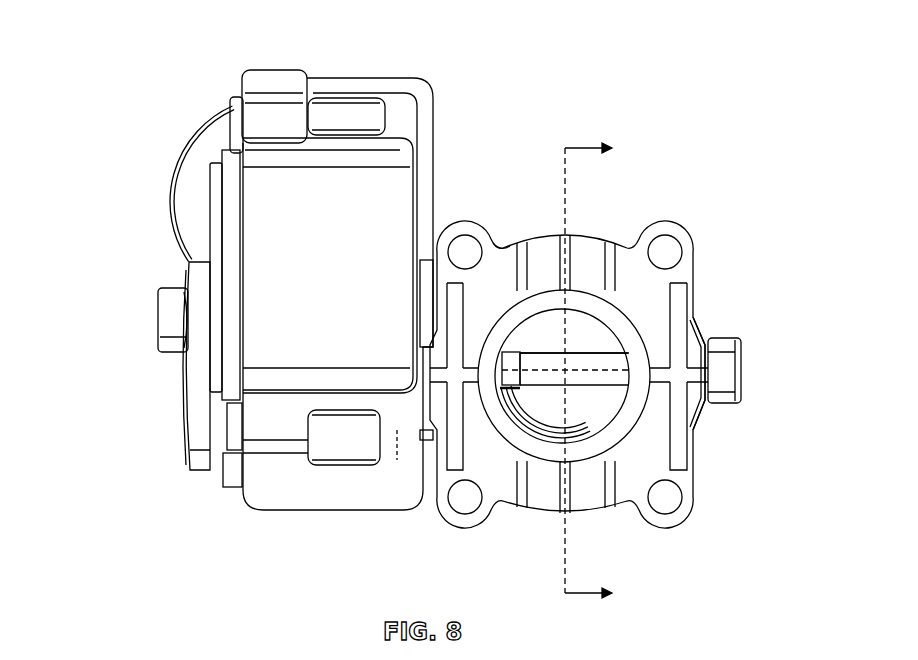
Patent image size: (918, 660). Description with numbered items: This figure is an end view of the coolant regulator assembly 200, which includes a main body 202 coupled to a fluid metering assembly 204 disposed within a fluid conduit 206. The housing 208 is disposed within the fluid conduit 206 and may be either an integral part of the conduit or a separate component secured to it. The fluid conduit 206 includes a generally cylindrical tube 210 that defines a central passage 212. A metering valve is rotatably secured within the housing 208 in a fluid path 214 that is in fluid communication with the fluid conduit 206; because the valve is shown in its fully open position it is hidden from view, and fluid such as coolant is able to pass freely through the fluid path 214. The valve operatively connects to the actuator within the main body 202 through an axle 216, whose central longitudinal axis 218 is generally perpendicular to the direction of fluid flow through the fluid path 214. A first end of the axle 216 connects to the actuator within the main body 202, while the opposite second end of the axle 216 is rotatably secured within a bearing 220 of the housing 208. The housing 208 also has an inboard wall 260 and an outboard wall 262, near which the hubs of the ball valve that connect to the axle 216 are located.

The coolant regulator assembly 200 is at (162, 55).
The main body 202 is at (160, 207).
The fluid metering assembly 204 is at (706, 276).
The fluid conduit 206 is at (628, 397).
The housing 208 is at (705, 332).
The cylindrical tube 210 is at (597, 310).
The central passage 212 is at (603, 370).
The fluid path 214 is at (550, 340).
The axle 216 is at (580, 412).
The central longitudinal axis 218 is at (538, 372).
The bearing 220 is at (744, 371).
The inboard wall 260 is at (500, 248).
The outboard wall 262 is at (695, 263).